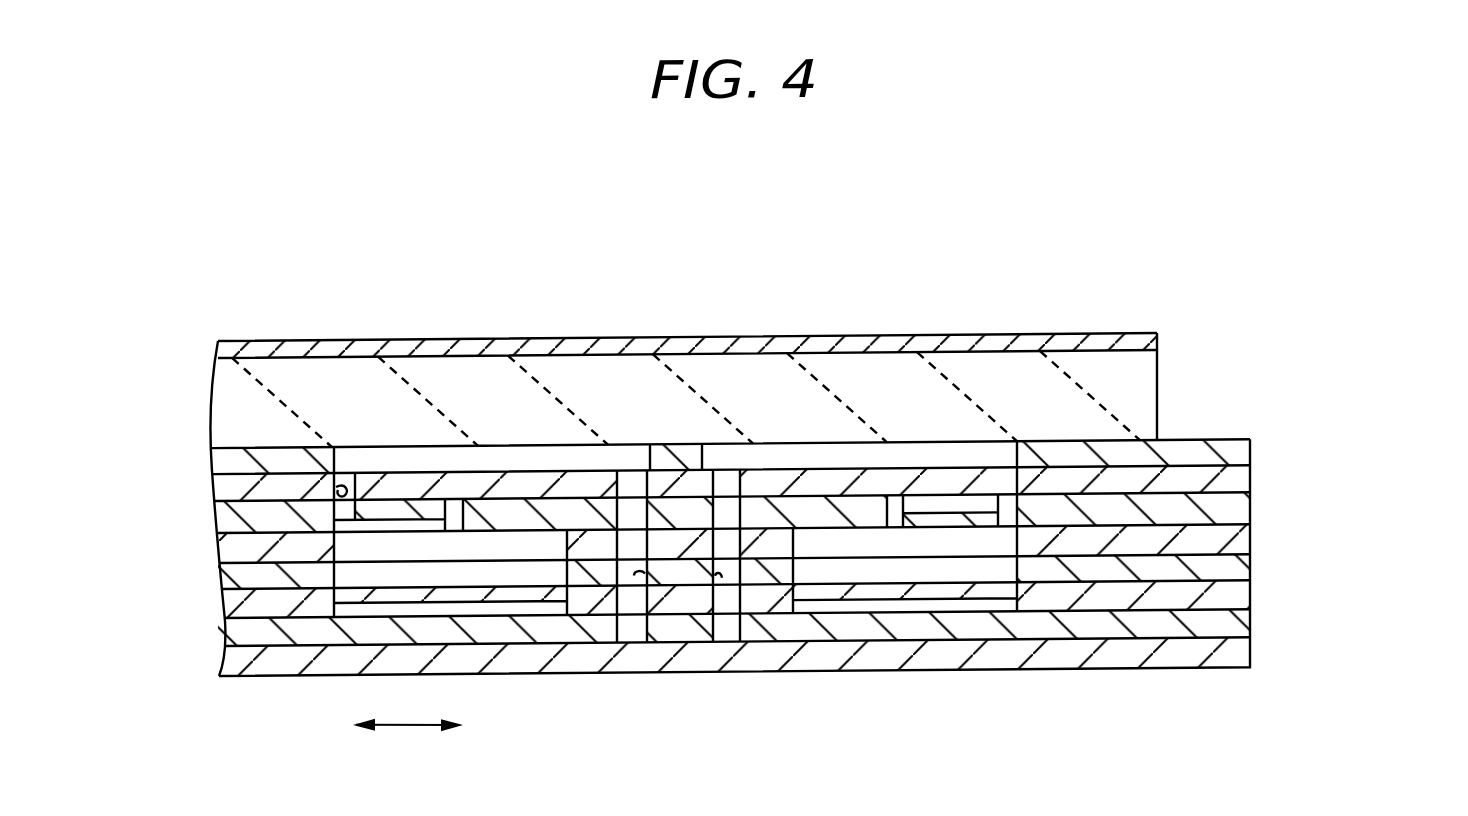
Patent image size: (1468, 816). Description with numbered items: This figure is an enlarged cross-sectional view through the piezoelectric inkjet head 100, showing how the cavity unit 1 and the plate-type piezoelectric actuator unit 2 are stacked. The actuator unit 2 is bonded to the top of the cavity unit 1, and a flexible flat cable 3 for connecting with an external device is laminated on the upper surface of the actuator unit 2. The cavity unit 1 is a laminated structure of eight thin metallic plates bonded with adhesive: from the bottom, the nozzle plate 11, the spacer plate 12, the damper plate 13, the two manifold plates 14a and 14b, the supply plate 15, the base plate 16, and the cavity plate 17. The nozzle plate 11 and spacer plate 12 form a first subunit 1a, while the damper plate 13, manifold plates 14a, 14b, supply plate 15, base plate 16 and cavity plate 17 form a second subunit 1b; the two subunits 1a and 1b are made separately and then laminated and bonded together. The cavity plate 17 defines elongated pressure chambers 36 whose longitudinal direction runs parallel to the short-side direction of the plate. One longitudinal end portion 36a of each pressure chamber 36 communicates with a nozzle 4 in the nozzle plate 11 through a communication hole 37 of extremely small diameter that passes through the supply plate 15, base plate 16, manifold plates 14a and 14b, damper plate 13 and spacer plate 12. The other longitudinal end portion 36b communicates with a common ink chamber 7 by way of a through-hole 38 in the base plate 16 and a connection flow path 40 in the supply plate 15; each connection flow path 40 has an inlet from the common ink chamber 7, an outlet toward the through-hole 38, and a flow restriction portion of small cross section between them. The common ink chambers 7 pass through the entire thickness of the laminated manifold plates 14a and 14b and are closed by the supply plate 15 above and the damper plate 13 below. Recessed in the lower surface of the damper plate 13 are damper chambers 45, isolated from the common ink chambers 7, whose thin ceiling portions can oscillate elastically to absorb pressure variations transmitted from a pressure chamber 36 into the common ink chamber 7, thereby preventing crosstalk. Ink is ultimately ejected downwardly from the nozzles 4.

The piezoelectric inkjet head 100 is at (204, 272).
The cavity unit 1 is at (1418, 476).
The first subunit 1a is at (1351, 646).
The second subunit 1b is at (1351, 382).
The piezoelectric actuator unit 2 is at (1136, 386).
The flexible flat cable 3 is at (1001, 323).
The nozzle 4 is at (634, 649).
The common ink chamber 7 is at (360, 580).
The nozzle plate 11 is at (1252, 661).
The spacer plate 12 is at (1252, 638).
The damper plate 13 is at (1252, 601).
The manifold plate 14a is at (1252, 578).
The manifold plate 14b is at (1252, 541).
The supply plate 15 is at (1252, 516).
The base plate 16 is at (1252, 488).
The cavity plate 17 is at (1252, 460).
The pressure chamber 36 is at (487, 459).
The one longitudinal end portion 36a is at (640, 467).
The other longitudinal end portion 36b is at (349, 458).
The communication hole 37 is at (722, 581).
The through-hole 38 is at (336, 487).
The connection flow path 40 is at (404, 519).
The damper chamber 45 is at (357, 604).